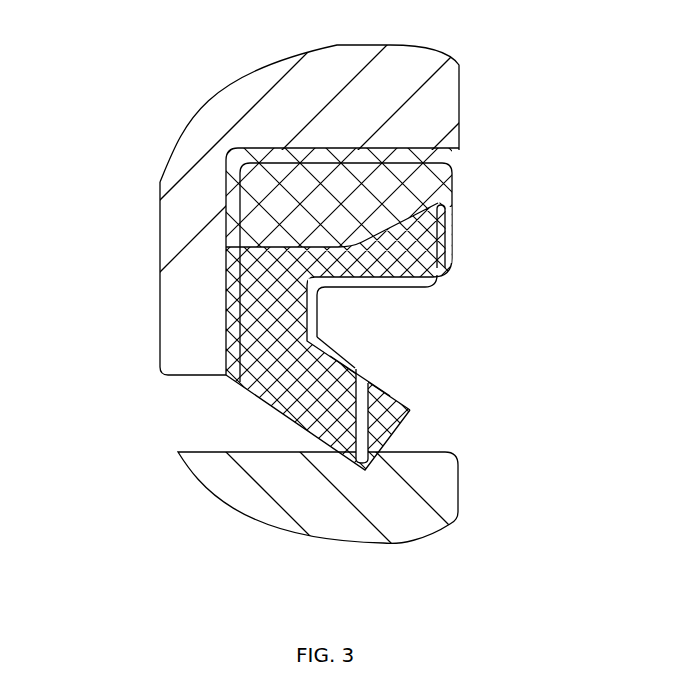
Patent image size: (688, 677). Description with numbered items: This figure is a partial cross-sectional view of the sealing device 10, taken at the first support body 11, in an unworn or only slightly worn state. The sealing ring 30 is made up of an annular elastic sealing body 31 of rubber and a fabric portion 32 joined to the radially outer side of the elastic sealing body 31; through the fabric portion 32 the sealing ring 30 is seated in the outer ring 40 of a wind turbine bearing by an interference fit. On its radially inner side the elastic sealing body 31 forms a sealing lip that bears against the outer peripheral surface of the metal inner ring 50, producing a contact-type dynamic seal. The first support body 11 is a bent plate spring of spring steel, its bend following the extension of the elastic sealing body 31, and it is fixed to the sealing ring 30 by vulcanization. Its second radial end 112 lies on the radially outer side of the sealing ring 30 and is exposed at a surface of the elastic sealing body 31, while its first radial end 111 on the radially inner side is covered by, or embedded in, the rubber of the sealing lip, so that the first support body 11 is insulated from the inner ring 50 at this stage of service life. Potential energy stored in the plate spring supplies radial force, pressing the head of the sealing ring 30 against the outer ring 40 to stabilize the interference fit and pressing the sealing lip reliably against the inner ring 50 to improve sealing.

The retainer / support member 10 is at (441, 321).
The first support body 11 is at (434, 278).
The first radial end 111 is at (361, 437).
The second radial end 112 is at (454, 238).
The sealing ring 30 is at (344, 293).
The elastic sealing body 31 is at (270, 362).
The fabric portion 32 is at (270, 188).
The outer ring 40 is at (435, 105).
The inner ring 50 is at (437, 502).